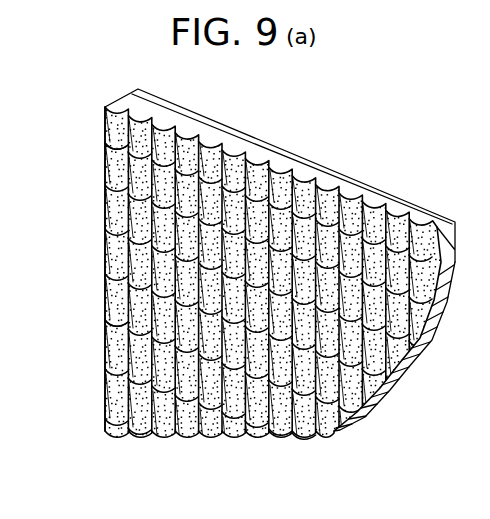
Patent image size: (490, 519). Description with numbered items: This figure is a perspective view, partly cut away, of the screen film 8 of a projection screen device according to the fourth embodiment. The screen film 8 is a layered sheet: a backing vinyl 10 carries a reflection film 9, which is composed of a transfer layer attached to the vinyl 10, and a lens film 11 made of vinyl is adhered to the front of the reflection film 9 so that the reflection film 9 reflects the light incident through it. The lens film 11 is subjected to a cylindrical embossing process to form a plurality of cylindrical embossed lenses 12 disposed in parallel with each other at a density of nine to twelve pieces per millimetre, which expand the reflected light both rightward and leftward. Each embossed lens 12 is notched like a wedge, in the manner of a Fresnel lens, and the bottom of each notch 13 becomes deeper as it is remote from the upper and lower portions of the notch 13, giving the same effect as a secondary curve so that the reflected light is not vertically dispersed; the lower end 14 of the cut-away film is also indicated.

The screen film 8 is at (414, 118).
The reflection film 9 is at (400, 200).
The vinyl 10 is at (355, 182).
The lens film 11 is at (302, 182).
The cylindrical embossed lens 12 is at (107, 300).
The notch 13 is at (107, 165).
The lower end of scales 14 is at (330, 434).